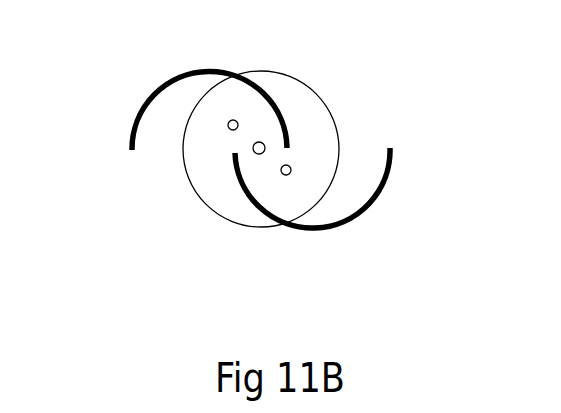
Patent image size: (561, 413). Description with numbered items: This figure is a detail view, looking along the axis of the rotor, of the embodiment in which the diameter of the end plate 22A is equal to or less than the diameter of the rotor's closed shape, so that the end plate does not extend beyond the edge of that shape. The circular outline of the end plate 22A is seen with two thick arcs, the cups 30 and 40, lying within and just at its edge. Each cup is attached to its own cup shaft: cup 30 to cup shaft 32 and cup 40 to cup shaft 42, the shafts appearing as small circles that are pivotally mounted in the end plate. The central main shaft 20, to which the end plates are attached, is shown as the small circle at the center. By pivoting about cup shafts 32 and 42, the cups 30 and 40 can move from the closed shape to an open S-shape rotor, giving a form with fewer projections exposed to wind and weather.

The end plate 22A is at (310, 85).
The cup 30 is at (131, 115).
The cup 40 is at (386, 183).
The cup shaft 32 is at (237, 110).
The central main shaft 20 is at (252, 147).
The cup shaft 42 is at (290, 167).